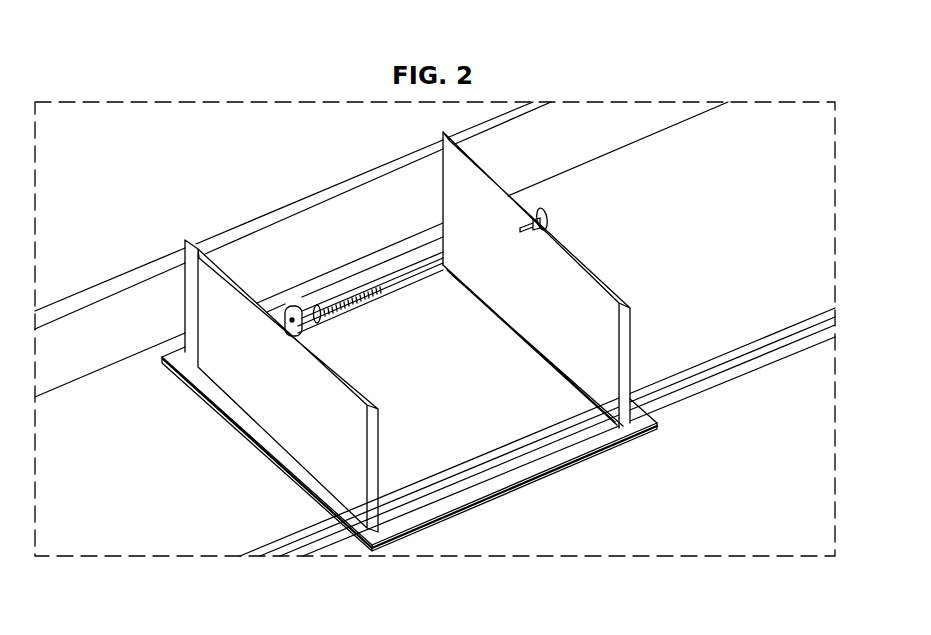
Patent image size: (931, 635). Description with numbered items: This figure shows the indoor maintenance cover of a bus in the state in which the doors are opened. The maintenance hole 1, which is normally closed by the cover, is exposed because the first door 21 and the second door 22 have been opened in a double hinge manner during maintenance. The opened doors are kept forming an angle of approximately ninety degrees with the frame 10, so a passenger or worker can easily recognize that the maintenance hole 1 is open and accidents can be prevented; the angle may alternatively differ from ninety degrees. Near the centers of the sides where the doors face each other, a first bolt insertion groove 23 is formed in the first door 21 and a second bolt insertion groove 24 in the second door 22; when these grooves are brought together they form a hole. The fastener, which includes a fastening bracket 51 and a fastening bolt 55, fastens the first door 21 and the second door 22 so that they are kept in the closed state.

The maintenance hole 1 is at (382, 366).
The frame 10 is at (508, 484).
The first door 21 is at (605, 284).
The second door 22 is at (247, 377).
The first bolt insertion groove 23 is at (552, 219).
The second bolt insertion groove 24 is at (283, 327).
The fastening bracket 51 is at (291, 305).
The fastening bolt 55 is at (548, 213).